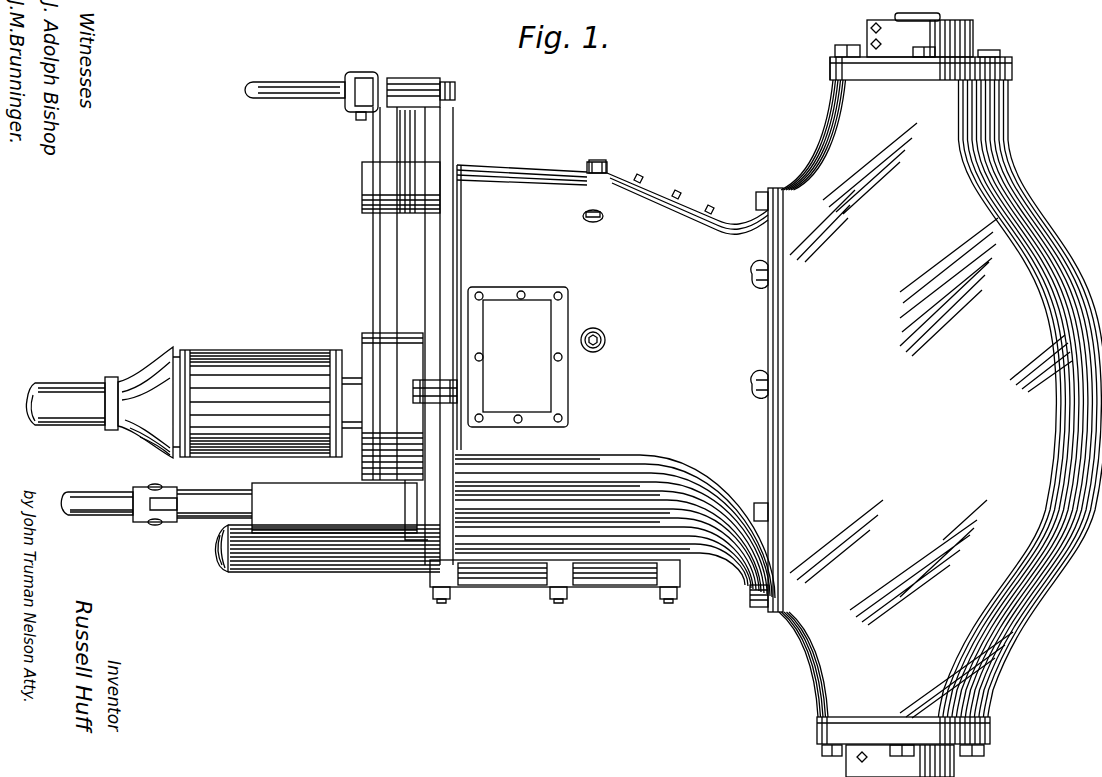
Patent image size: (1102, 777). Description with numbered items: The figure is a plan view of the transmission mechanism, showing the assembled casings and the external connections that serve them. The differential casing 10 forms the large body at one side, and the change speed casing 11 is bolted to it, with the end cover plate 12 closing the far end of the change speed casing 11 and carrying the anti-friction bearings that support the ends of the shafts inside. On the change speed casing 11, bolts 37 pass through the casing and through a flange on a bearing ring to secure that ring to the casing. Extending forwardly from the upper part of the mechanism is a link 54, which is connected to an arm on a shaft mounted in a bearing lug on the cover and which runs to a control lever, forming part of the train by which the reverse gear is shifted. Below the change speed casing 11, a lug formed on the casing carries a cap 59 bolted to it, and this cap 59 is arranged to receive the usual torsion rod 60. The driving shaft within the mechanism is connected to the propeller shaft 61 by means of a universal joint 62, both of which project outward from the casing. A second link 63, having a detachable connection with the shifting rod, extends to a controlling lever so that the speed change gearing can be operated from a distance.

The differential casing 10 is at (940, 395).
The change speed casing 11 is at (615, 380).
The end cover plate 12 is at (397, 247).
The bolts 37 is at (607, 162).
The link 54 is at (305, 92).
The cap 59 is at (502, 587).
The torsion rod 60 is at (250, 573).
The propeller shaft 61 is at (63, 423).
The universal joint 62 is at (233, 353).
The link 63 is at (100, 513).